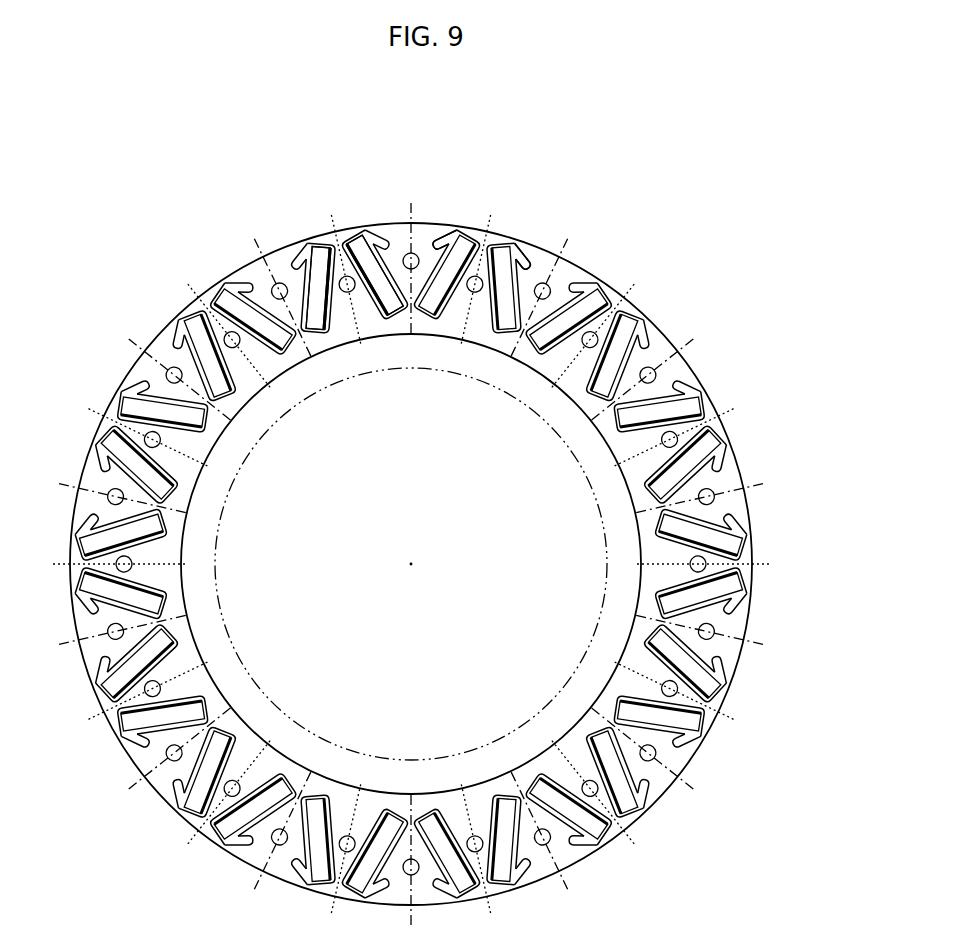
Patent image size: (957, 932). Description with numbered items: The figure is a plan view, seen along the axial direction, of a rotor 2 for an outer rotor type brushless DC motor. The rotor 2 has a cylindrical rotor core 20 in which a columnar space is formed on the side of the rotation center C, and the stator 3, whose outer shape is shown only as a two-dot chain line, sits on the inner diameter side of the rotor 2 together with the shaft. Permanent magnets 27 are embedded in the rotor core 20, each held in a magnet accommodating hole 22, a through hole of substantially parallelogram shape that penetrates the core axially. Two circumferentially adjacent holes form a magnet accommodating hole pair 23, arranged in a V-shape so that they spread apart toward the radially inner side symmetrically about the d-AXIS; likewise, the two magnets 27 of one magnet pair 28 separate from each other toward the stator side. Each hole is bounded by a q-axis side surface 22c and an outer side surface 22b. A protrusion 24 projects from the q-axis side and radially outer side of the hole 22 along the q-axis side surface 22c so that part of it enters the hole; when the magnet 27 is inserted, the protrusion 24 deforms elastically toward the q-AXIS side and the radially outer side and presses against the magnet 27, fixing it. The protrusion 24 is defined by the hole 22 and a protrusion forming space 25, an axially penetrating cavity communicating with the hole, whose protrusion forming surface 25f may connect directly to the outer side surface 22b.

The rotor 2 is at (140, 217).
The rotor core 20 is at (152, 337).
The stator 3 is at (300, 733).
The magnet accommodating hole 22 is at (418, 318).
The outer side surface 22b is at (467, 236).
The q-axis side surface 22c is at (413, 312).
The magnet accommodating hole pair 23 is at (428, 338).
The protrusion 24 is at (437, 243).
The protrusion forming space 25 is at (460, 234).
The protrusion forming surface 25f is at (446, 239).
The magnet 27 is at (316, 243).
The magnet pair 28 is at (317, 235).
The rotation center C is at (412, 566).
The q-axis q-AXIS is at (410, 206).
The d-axis d-AXIS is at (490, 217).